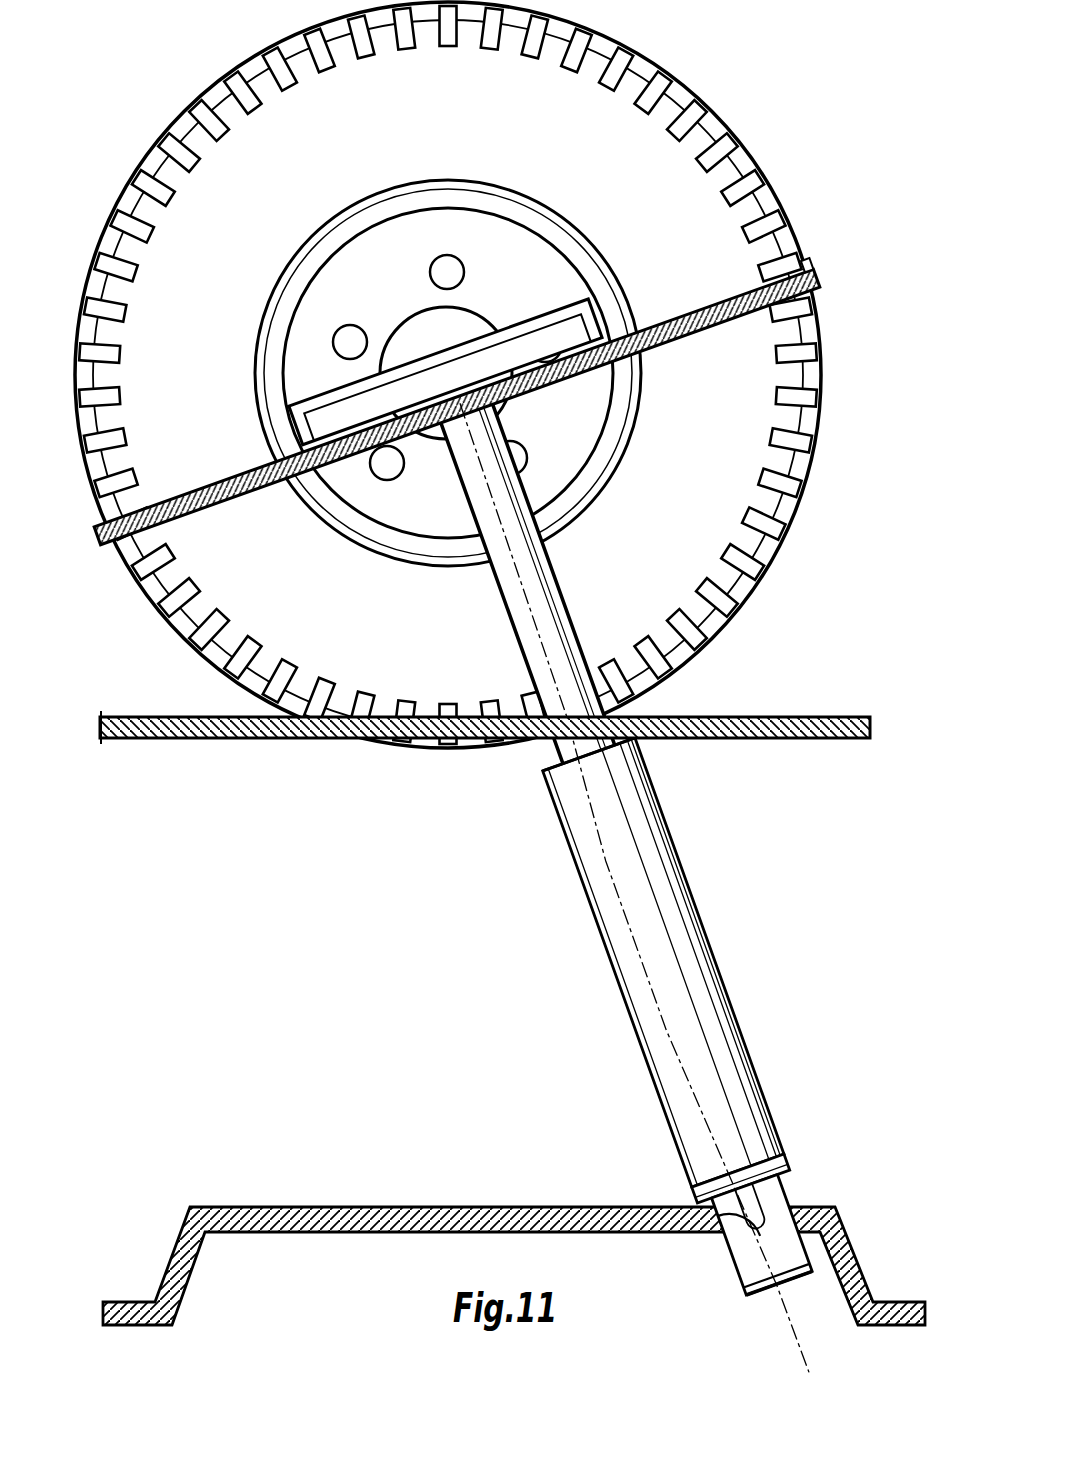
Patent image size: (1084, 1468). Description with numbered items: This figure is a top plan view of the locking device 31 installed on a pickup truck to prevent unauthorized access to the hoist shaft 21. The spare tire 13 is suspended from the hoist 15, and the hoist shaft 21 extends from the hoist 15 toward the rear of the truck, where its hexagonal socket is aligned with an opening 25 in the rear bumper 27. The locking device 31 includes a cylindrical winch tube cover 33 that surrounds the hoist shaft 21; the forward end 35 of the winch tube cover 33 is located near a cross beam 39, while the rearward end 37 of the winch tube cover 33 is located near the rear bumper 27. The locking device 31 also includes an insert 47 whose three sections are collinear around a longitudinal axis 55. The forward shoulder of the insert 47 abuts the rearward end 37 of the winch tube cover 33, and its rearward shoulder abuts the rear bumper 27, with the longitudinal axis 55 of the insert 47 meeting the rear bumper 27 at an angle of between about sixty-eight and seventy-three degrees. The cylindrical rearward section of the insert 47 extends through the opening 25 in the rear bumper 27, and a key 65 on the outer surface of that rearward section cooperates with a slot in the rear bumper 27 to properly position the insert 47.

The spare tire 13 is at (623, 88).
The hoist 15 is at (536, 337).
The hoist shaft 21 is at (545, 580).
The opening 25 is at (727, 1247).
The rear bumper 27 is at (368, 1232).
The locking device 31 is at (659, 975).
The winch tube cover 33 is at (703, 982).
The forward end 35 is at (560, 783).
The rearward end 37 is at (760, 1160).
The cross beam 39 is at (228, 740).
The insert 47 is at (771, 1239).
The longitudinal axis 55 is at (797, 1337).
The key 65 is at (733, 1278).